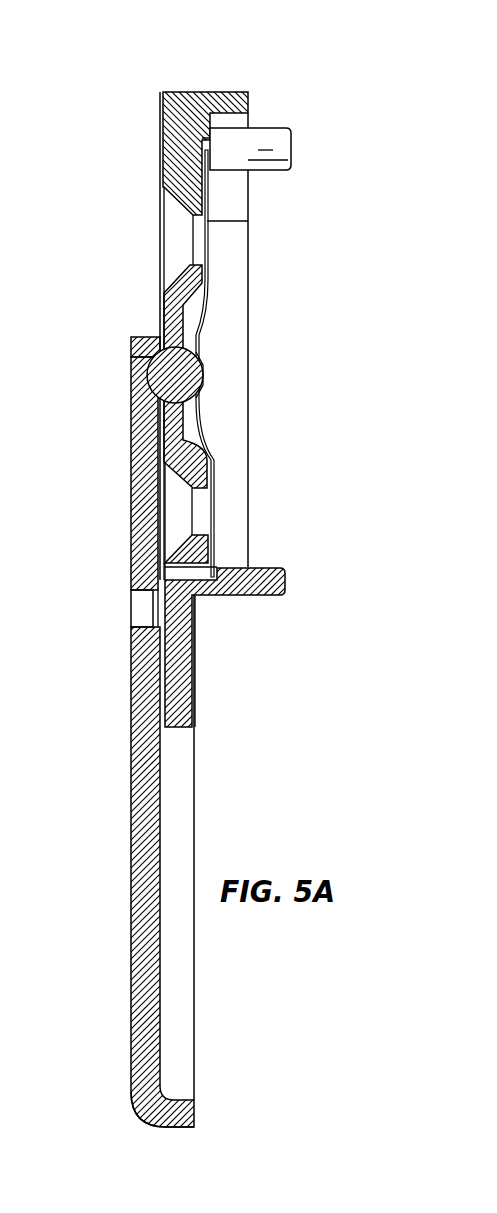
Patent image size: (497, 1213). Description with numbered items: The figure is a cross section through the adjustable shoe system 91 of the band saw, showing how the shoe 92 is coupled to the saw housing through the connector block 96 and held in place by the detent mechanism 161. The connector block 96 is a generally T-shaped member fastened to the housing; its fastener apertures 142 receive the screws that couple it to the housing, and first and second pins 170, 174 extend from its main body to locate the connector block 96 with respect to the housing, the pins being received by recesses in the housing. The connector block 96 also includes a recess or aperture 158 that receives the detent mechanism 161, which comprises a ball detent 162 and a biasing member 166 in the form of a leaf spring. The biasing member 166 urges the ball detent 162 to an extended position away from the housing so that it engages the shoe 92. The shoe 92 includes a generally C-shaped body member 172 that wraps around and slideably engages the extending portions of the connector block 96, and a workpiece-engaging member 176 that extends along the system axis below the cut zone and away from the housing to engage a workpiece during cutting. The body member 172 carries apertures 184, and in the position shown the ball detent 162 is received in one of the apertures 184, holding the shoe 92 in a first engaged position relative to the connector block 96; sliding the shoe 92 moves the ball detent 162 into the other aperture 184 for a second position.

The adjustable shoe system 91 is at (134, 70).
The second pin 174 is at (275, 128).
The fastener apertures 142 is at (193, 220).
The connector block 96 is at (158, 315).
The apertures 184 is at (138, 352).
The biasing member 166 is at (207, 330).
The ball detent 162 is at (203, 365).
The recess or aperture 158 is at (185, 371).
The detent mechanism 161 is at (212, 414).
The body member 172 is at (133, 420).
The first pin 170 is at (283, 597).
The shoe 92 is at (132, 813).
The workpiece-engaging member 176 is at (132, 972).